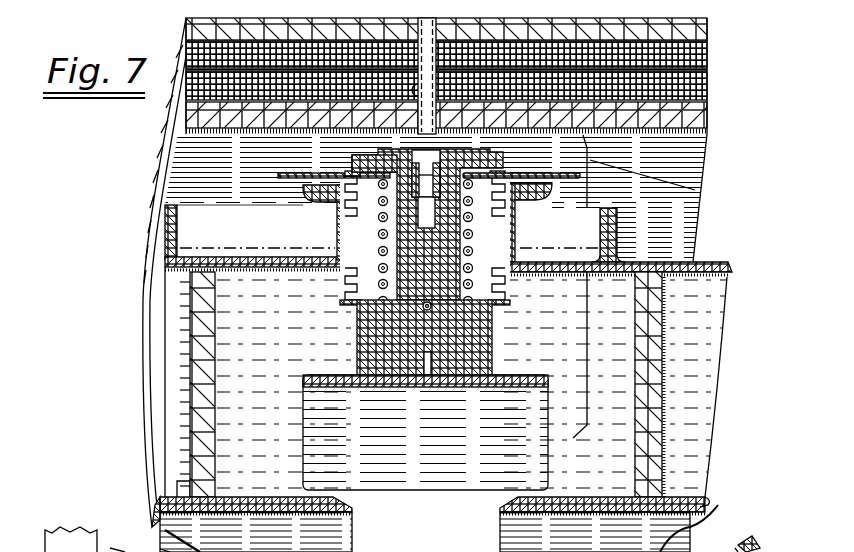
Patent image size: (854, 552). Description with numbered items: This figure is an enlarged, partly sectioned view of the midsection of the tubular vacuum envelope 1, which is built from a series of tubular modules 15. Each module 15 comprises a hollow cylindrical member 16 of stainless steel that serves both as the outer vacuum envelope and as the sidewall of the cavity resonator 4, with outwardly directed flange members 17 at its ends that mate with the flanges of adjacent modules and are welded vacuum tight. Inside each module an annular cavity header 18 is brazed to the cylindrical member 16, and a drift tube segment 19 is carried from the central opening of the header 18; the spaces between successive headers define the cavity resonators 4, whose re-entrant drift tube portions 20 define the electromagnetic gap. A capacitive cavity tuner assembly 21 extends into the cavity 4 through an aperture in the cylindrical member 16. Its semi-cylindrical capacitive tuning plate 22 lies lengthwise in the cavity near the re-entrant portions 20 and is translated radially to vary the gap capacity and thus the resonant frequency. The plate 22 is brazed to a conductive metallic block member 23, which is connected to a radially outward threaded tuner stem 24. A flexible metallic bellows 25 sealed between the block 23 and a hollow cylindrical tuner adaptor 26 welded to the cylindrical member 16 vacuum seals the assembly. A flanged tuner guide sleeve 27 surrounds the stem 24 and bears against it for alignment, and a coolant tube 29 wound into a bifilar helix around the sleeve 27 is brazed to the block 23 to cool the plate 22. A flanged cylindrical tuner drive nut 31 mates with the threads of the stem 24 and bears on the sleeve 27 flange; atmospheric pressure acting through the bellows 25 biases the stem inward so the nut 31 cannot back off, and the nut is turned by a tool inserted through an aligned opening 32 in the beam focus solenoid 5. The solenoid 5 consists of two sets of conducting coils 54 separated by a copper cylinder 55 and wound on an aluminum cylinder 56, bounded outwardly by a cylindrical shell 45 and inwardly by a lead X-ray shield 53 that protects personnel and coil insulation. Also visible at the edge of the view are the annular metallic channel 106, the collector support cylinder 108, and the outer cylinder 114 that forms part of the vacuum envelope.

The tubular vacuum envelope 1 is at (755, 219).
The cavity resonator 4 is at (268, 409).
The beam focus solenoid 5 is at (493, 76).
The tubular module 15 is at (261, 231).
The hollow cylindrical member 16 is at (302, 258).
The flange member 17 is at (171, 232).
The annular cavity header 18 is at (203, 277).
The drift tube segment 19 is at (168, 490).
The re-entrant drift tube portion 20 is at (265, 497).
The capacitive cavity tuner assembly 21 is at (689, 186).
The capacitive tuning plate 22 is at (438, 467).
The conductive metallic block member 23 is at (482, 338).
The threaded tuner stem 24 is at (400, 246).
The flexible hollow cylindrical metallic bellows 25 is at (503, 213).
The hollow cylindrical tuner adaptor 26 is at (552, 187).
The flanged hollow cylindrical tuner guide sleeve 27 is at (307, 173).
The coolant tube 29 is at (385, 232).
The cylindrical tuner drive nut 31 is at (360, 155).
The aligned opening 32 is at (418, 90).
The cylindrical shell 45 is at (707, 38).
The cylindrical X-ray shield 53 is at (707, 123).
The conducting coils 54 is at (481, 70).
The hollow metallic cylinder 55 is at (707, 72).
The hollow cylinder 56 is at (707, 110).
The annular metallic channel 106 is at (115, 547).
The collector support cylinder 108 is at (720, 544).
The outer concentrically disposed cylinder 114 is at (156, 542).